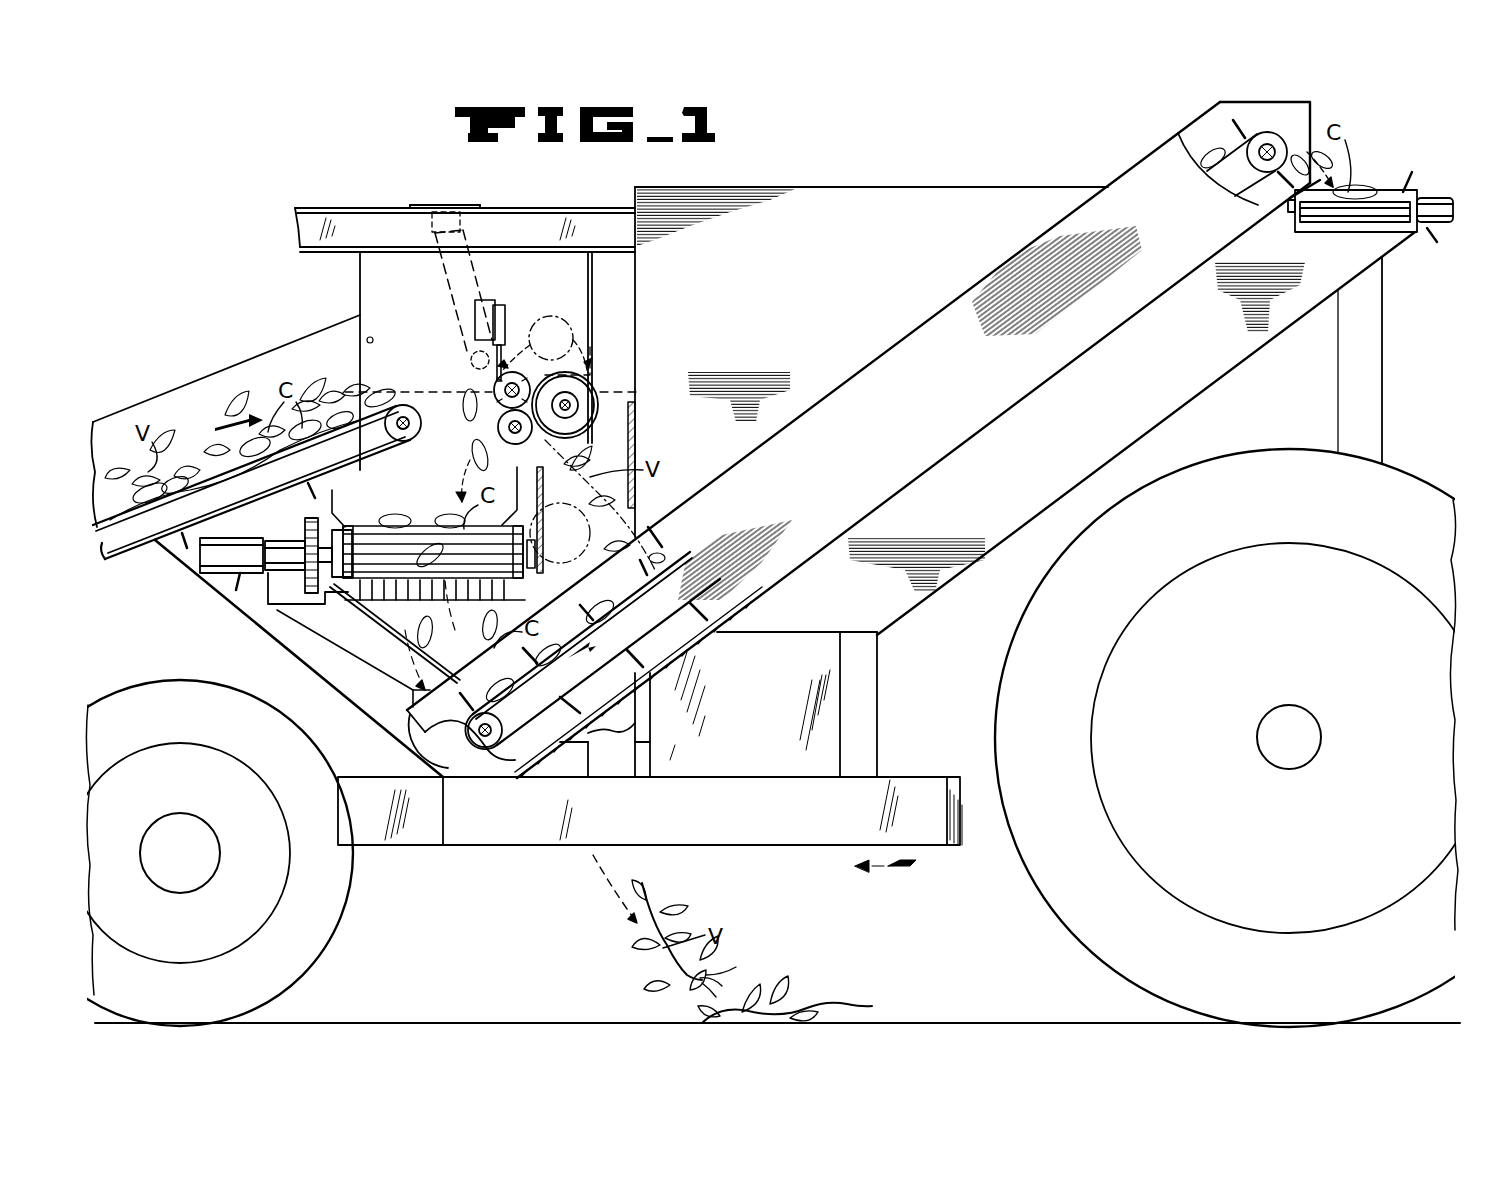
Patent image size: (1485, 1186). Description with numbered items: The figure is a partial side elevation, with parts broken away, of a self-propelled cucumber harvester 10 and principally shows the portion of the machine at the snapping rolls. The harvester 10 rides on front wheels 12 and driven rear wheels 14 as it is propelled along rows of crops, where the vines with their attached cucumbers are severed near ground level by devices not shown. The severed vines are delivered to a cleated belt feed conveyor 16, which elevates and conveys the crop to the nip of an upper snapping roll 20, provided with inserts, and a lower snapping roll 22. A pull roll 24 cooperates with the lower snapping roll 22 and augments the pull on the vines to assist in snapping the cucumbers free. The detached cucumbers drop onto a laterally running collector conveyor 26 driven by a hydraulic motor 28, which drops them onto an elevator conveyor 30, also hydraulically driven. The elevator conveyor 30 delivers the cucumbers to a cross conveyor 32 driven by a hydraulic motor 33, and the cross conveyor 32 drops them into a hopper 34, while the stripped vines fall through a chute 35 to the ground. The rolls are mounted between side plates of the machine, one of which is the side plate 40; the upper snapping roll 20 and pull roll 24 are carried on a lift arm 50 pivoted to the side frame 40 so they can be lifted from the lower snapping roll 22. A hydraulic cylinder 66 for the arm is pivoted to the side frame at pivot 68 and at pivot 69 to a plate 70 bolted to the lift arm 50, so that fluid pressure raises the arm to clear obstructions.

The harvester 10 is at (220, 278).
The front wheels 12 is at (330, 916).
The driven rear wheels 14 is at (1055, 880).
The cleated belt feed conveyor 16 is at (130, 557).
The upper snapping roll 20 is at (494, 388).
The lower snapping roll 22 is at (498, 427).
The pull roll 24 is at (583, 377).
The collector conveyor 26 is at (372, 528).
The hydraulic motor 28 is at (200, 568).
The elevator conveyor 30 is at (650, 534).
The cross conveyor 32 is at (1332, 218).
The hydraulic motor 33 is at (1435, 198).
The hopper 34 is at (1195, 344).
The chute 35 is at (628, 519).
The side plate 40 is at (360, 284).
The lift arm 50 is at (597, 388).
The hydraulic cylinder 66 is at (436, 270).
The pivot 68 is at (432, 218).
The pivot 69 is at (470, 358).
The plate 70 is at (478, 350).